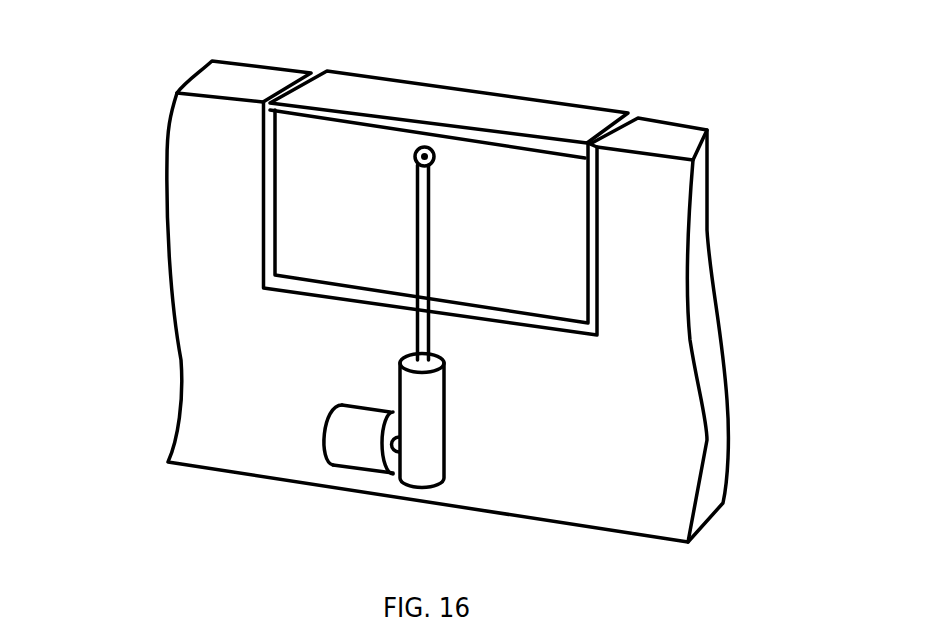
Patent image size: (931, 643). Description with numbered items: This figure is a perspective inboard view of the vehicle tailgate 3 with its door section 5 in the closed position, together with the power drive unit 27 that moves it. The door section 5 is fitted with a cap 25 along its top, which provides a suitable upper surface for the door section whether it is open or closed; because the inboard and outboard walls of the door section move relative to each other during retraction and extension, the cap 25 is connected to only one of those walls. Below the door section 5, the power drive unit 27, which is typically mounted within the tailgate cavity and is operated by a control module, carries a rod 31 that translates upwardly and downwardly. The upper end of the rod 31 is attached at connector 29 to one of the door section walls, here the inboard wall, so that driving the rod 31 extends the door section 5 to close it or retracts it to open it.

The vehicle tailgate 3 is at (638, 203).
The door section 5 is at (307, 215).
The cap 25 is at (410, 108).
The connector 29 is at (434, 161).
The rod 31 is at (430, 256).
The power drive unit 27 is at (428, 438).